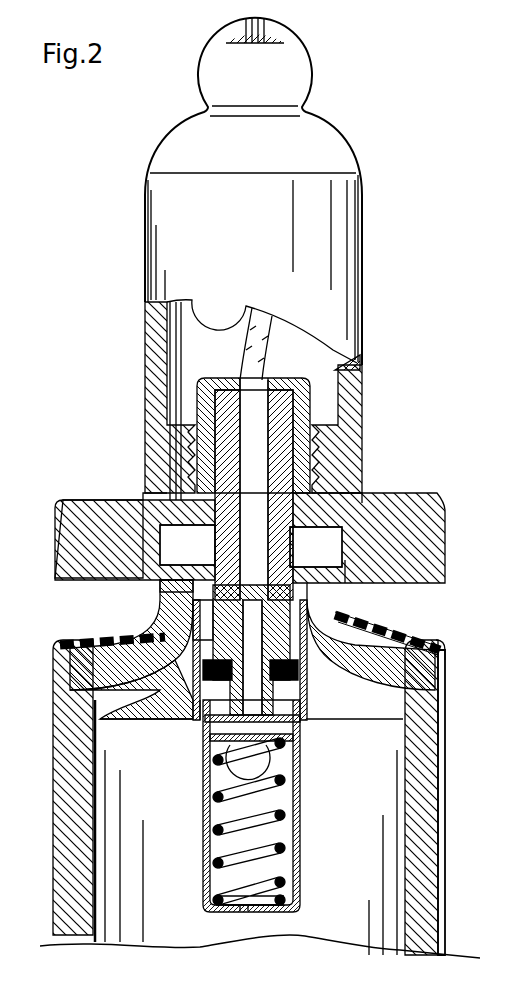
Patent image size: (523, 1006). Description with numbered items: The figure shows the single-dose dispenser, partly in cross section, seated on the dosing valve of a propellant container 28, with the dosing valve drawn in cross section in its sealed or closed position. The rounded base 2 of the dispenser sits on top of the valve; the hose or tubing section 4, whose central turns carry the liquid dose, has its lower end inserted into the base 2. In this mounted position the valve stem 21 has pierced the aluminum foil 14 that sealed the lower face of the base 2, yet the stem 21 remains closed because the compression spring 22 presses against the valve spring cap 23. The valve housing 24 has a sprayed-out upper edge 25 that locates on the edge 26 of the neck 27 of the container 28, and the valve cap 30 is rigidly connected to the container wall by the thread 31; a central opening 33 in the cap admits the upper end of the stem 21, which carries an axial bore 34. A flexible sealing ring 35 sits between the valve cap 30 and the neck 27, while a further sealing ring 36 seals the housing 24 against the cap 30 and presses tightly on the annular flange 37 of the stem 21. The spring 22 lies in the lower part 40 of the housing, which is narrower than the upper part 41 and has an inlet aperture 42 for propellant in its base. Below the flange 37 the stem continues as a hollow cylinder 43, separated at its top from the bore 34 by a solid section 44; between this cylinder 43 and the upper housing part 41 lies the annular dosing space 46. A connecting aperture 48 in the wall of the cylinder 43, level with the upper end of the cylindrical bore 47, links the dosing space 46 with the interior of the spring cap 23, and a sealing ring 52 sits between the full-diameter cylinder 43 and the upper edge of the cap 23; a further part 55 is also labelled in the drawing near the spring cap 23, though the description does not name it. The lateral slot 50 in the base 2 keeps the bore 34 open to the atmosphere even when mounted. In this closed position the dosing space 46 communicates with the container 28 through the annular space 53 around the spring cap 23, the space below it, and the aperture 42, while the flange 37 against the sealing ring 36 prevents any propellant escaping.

The rounded base 2 is at (350, 508).
The hose or tubing section 4 is at (250, 340).
The aluminum foil 14 is at (180, 528).
The valve stem 21 is at (298, 420).
The compression spring 22 is at (286, 886).
The valve spring cap 23 is at (300, 736).
The valve housing 24 is at (203, 797).
The upper edge of valve housing 25 is at (162, 610).
The edge of neck 26 is at (340, 612).
The neck of propellant container 27 is at (150, 670).
The propellant container 28 is at (430, 847).
The valve cap 30 is at (446, 768).
The thread 31 is at (55, 760).
The central opening 33 is at (295, 562).
The axial bore 34 is at (265, 435).
The flexible sealing ring 35 is at (446, 657).
The flexible sealing ring 36 is at (342, 572).
The annular flange 37 is at (175, 592).
The lower part of valve housing 40 is at (204, 877).
The upper part of valve housing 41 is at (196, 672).
The inlet aperture 42 is at (250, 912).
The hollow cylinder 43 is at (330, 604).
The solid section 44 is at (254, 495).
The annular space 46 is at (345, 625).
The cylindrical bore 47 is at (250, 645).
The connecting aperture 48 is at (212, 625).
The lateral slot 50 is at (152, 550).
The sealing ring 52 is at (300, 678).
The annular space 53 is at (212, 700).
The bottom plate 55 is at (305, 700).